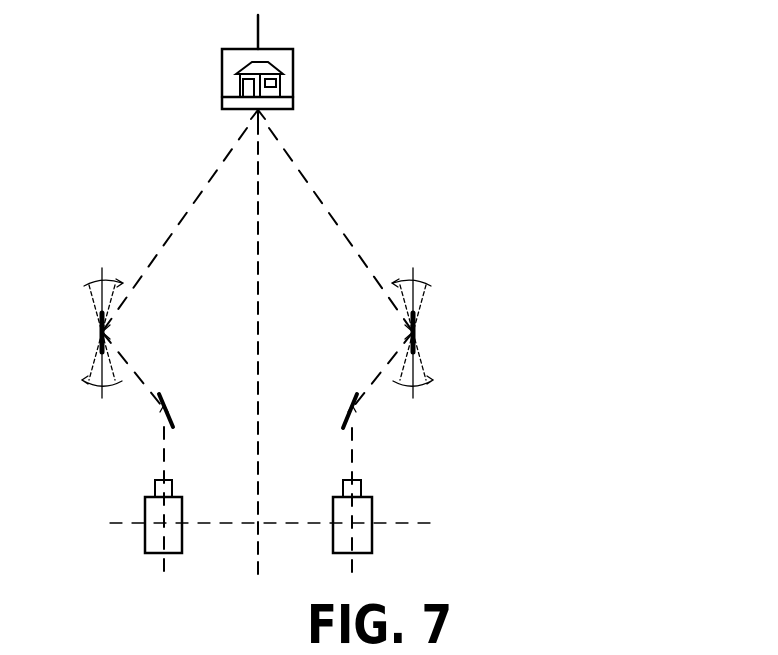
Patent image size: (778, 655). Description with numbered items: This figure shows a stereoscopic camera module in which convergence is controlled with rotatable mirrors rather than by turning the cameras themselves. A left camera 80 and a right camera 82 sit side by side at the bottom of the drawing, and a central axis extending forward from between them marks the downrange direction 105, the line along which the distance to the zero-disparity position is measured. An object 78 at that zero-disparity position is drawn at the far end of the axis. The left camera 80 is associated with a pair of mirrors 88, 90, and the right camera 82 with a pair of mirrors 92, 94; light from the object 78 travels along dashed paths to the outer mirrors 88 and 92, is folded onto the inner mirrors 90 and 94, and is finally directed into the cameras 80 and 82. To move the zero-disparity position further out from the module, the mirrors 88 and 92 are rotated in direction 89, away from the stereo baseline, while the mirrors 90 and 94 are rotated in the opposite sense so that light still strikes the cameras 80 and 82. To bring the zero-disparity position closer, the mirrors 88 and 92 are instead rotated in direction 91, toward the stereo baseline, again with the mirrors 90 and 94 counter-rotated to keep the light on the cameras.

The object 78 is at (272, 49).
The left camera 80 is at (150, 535).
The right camera 82 is at (363, 535).
The mirror 88 is at (100, 332).
The direction 89 is at (97, 388).
The mirror 90 is at (168, 402).
The direction 91 is at (84, 286).
The mirror 92 is at (417, 332).
The mirror 94 is at (346, 403).
The direction 105 is at (288, 290).